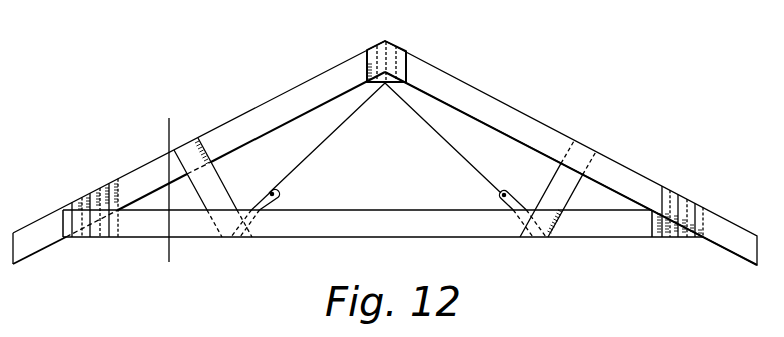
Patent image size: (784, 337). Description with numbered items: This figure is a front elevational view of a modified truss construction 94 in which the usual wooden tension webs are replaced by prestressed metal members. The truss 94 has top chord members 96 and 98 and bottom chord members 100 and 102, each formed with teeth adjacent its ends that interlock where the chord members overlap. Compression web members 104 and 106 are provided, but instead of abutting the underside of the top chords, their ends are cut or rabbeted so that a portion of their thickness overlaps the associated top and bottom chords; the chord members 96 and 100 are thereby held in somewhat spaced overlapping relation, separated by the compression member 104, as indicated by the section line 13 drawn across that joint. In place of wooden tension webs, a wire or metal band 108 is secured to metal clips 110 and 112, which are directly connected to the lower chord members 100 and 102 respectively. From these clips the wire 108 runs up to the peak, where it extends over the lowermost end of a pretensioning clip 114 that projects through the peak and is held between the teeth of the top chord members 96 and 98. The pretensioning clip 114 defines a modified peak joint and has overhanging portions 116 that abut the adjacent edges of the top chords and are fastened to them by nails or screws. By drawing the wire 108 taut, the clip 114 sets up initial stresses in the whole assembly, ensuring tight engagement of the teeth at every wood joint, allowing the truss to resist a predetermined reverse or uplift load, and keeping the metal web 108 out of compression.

The truss 94 is at (217, 90).
The top chord member 96 is at (310, 86).
The top chord member 98 is at (527, 122).
The bottom chord member 100 is at (323, 228).
The bottom chord member 102 is at (598, 228).
The compression web member 104 is at (217, 182).
The compression web member 106 is at (568, 190).
The wire or metal band 108 is at (315, 147).
The metal clip 110 is at (274, 196).
The metal clip 112 is at (500, 196).
The pretensioning clip 114 is at (382, 87).
The overhanging portions 116 is at (372, 48).
The section line 13- 13 is at (184, 256).